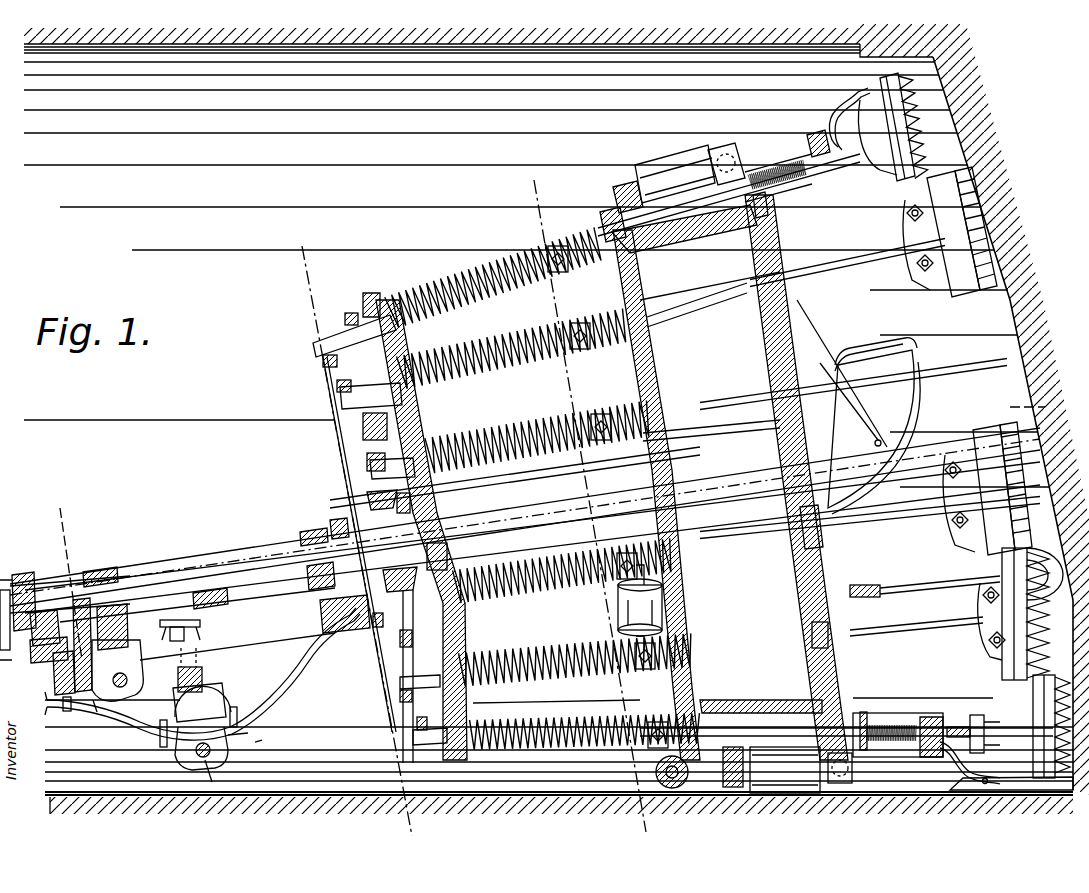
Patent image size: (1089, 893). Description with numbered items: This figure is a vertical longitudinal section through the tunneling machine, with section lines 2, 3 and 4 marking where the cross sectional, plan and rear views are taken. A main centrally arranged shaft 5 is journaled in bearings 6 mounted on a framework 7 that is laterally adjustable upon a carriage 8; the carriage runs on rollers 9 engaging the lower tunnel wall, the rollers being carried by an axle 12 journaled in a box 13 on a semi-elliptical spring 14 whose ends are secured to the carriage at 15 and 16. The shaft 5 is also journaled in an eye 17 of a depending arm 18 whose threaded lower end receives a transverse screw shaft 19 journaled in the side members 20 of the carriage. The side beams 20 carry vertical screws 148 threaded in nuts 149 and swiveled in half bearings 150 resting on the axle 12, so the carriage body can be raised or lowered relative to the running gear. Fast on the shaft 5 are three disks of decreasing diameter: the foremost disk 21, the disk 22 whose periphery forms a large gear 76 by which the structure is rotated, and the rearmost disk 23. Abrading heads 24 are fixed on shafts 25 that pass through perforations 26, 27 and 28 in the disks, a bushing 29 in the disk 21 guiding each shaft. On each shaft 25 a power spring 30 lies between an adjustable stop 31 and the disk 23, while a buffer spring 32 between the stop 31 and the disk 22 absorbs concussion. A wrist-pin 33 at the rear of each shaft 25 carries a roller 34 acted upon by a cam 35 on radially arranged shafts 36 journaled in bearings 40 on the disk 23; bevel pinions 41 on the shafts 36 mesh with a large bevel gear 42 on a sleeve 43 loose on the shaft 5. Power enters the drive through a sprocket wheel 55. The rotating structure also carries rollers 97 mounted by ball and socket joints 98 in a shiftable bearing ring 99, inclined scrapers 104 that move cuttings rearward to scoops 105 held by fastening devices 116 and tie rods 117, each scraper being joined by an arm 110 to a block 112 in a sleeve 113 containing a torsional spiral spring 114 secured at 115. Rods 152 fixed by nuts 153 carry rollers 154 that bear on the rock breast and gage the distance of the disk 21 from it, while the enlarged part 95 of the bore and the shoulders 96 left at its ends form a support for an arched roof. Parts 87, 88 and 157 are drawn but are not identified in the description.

The section line 2— 2 is at (523, 189).
The section line 3— 3 is at (53, 524).
The section line 4— 4 is at (292, 257).
The main shaft 5 is at (185, 560).
The bearings 6 is at (300, 536).
The framework 7 is at (214, 775).
The carriage 8 is at (202, 674).
The rollers 9 is at (262, 740).
The axle 12 is at (212, 758).
The box 13 is at (170, 750).
The semi-elliptical spring 14 is at (235, 690).
The forward spring securing point 15 is at (395, 590).
The rear spring securing point 16 is at (60, 715).
The eye 17 is at (48, 610).
The depending arm 18 is at (125, 635).
The screw shaft 19 is at (98, 712).
The side members 20 is at (312, 606).
The foremost disk 21 is at (775, 328).
The intermediate disk 22 is at (655, 350).
The rearmost disk 23 is at (420, 420).
The abrading heads 24 is at (980, 395).
The reciprocable shaft 25 is at (765, 728).
The perforation in foremost disk 26 is at (852, 524).
The perforation in intermediate disk 27 is at (688, 555).
The perforation in rearmost disk 28 is at (462, 596).
The bushing 29 is at (810, 545).
The power spring 30 is at (552, 640).
The adjustable stop 31 is at (615, 590).
The buffer spring 32 is at (668, 725).
The wrist-pin 33 is at (65, 613).
The antifrictional roller 34 is at (400, 728).
The cam 35 is at (335, 428).
The radial cam shaft 36 is at (520, 648).
The bearings 40 is at (410, 623).
The bevel pinions 41 is at (400, 640).
The bevel gear 42 is at (440, 492).
The sleeve 43 is at (365, 500).
The sprocket wheel 55 is at (22, 575).
The large gear 76 is at (600, 220).
The collar 87 is at (332, 528).
The roller 88 is at (676, 790).
The enlarged part of bore 95 is at (842, 50).
The shoulders 96 is at (234, 418).
The rollers 97 is at (680, 150).
The ball and socket joints 98 is at (840, 790).
The bearing ring 99 is at (730, 790).
The scrapers 104 is at (950, 78).
The scoops 105 is at (910, 342).
The arm 110 is at (972, 740).
The block 112 is at (932, 715).
The sleeve 113 is at (884, 712).
The spiral spring 114 is at (905, 710).
The spring securing point 115 is at (865, 712).
The fastening devices 116 is at (885, 465).
The tie rods 117 is at (840, 325).
The screws 148 is at (165, 620).
The nuts 149 is at (200, 630).
The half bearings 150 is at (245, 728).
The rods 152 is at (930, 586).
The nuts 153 is at (810, 630).
The roller 154 is at (1035, 562).
The block 157 is at (176, 676).